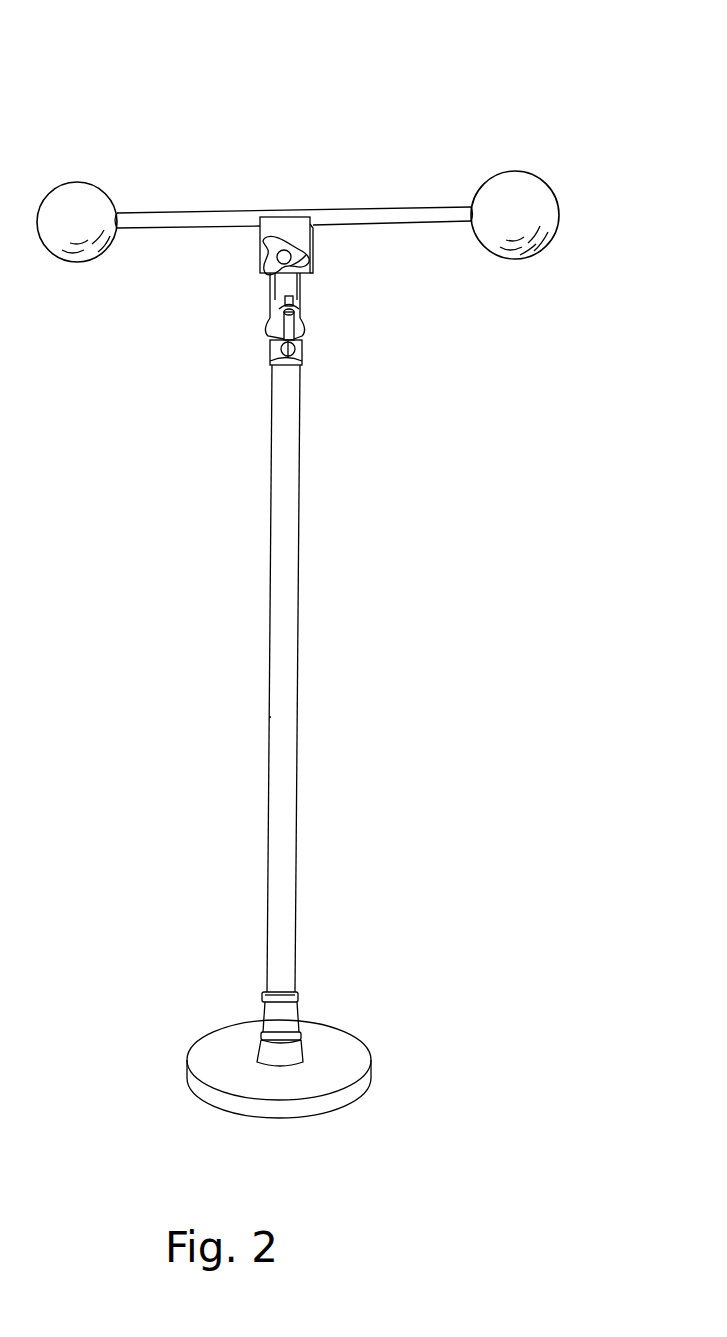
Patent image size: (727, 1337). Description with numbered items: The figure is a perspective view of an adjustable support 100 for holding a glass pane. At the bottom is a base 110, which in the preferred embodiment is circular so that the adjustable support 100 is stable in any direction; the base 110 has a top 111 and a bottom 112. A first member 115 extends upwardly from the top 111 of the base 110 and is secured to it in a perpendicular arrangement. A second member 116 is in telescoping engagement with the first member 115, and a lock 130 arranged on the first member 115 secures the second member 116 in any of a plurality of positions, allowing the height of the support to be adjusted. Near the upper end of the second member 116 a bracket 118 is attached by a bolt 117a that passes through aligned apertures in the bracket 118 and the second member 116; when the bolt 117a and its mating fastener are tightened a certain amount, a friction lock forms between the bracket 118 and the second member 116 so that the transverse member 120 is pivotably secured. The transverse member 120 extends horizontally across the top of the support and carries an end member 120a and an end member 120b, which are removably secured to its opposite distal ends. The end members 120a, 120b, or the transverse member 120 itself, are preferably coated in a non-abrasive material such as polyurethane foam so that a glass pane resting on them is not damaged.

The adjustable support 100 is at (437, 107).
The base 110 is at (353, 1030).
The top 111 is at (322, 1062).
The bottom 112 is at (332, 1112).
The first member 115 is at (297, 748).
The second member 116 is at (270, 300).
The bolt 117a is at (308, 268).
The bracket 118 is at (258, 265).
The transverse member 120 is at (212, 212).
The end member 120a is at (82, 182).
The end member 120b is at (522, 171).
The lock 130 is at (302, 355).